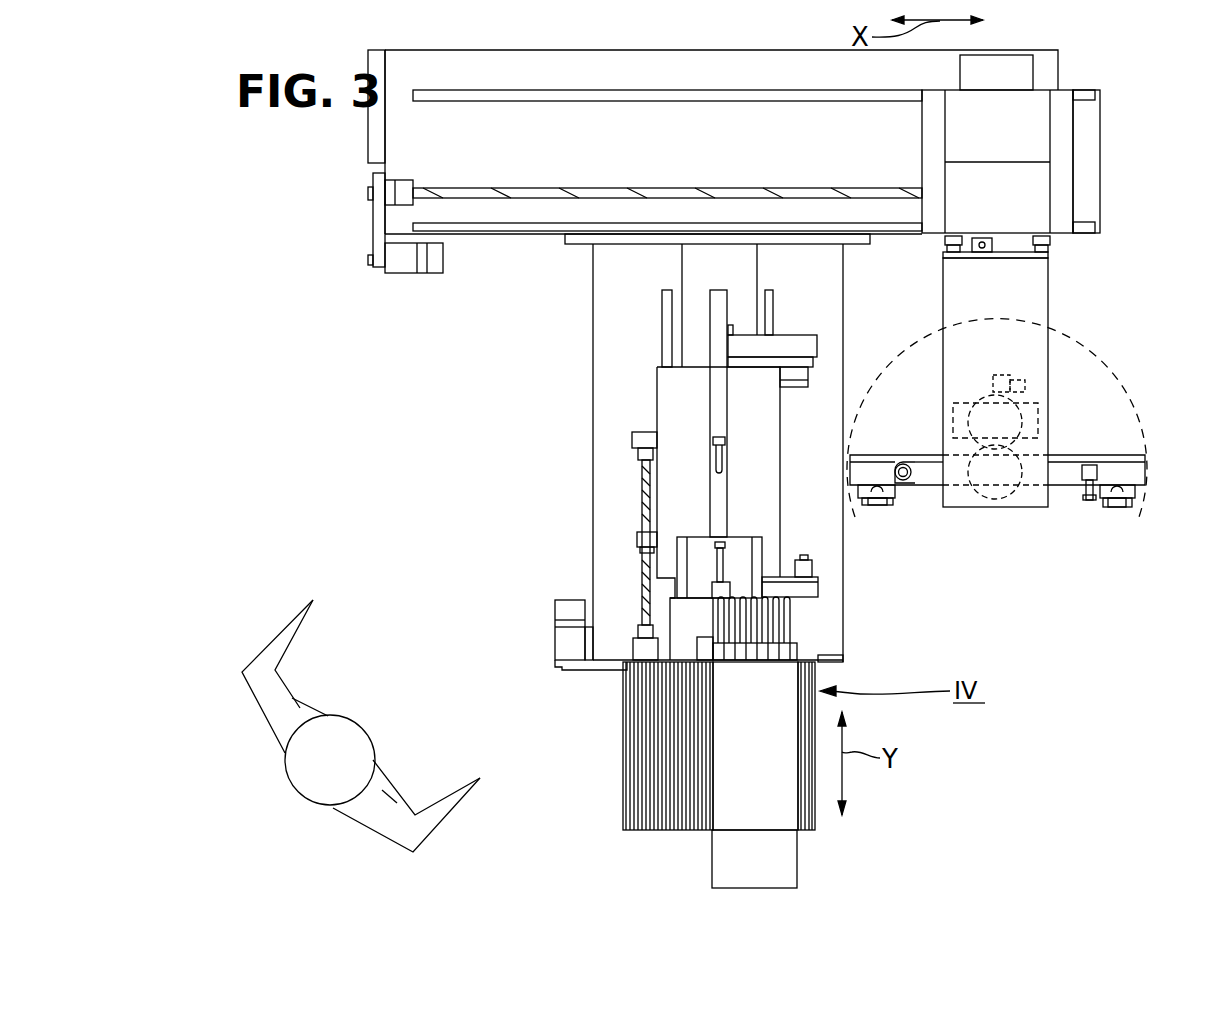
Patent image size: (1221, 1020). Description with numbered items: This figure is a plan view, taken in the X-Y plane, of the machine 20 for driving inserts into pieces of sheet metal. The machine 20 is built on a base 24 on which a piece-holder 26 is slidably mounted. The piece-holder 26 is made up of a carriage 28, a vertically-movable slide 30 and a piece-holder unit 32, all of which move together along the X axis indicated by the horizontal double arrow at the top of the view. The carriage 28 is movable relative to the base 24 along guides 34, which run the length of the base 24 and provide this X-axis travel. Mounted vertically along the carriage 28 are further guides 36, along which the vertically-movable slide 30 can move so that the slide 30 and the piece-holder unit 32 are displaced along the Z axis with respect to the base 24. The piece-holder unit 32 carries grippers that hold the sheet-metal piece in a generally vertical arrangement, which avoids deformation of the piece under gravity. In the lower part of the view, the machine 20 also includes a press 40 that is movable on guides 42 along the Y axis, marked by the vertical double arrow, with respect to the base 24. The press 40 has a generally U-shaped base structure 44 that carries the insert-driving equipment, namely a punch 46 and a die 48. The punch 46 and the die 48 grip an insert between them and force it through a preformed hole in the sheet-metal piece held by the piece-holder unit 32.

The machine 20 is at (490, 430).
The base 24 is at (556, 244).
The piece-holder 26 is at (1133, 356).
The carriage 28 is at (1030, 199).
The vertically-movable slide 30 is at (1035, 308).
The piece-holder unit 32 is at (1165, 458).
The guides 34 is at (728, 222).
The guides 36 is at (948, 258).
The press 40 is at (641, 494).
The guides 42 is at (668, 302).
The base structure 44 is at (725, 388).
The punch 46 is at (723, 565).
The die 48 is at (722, 462).